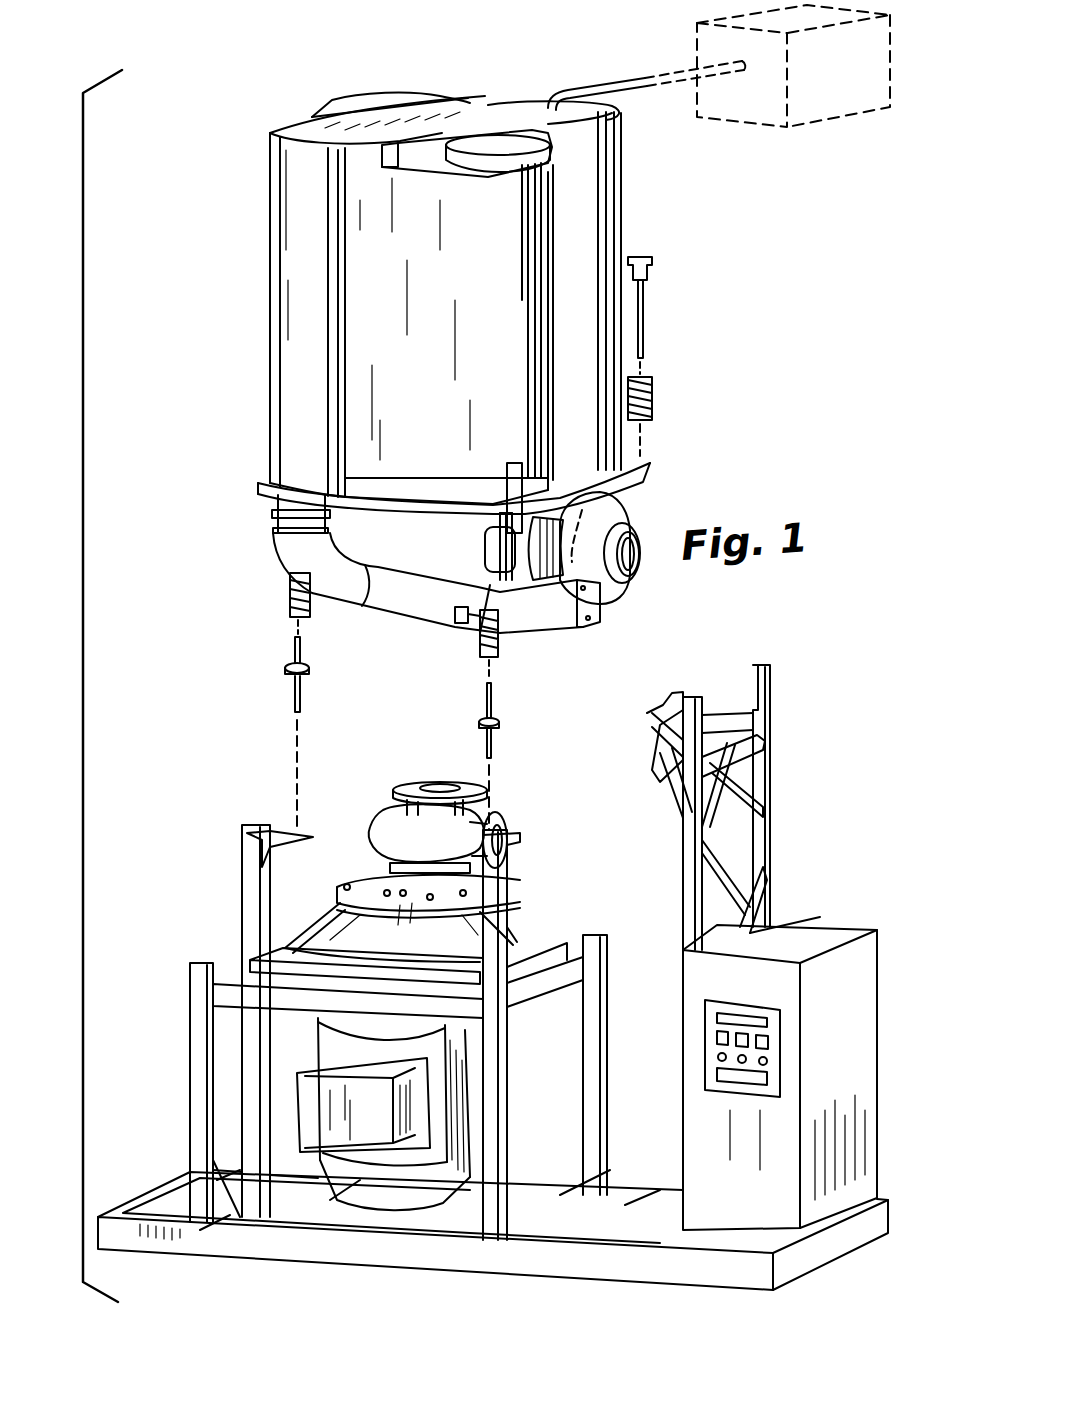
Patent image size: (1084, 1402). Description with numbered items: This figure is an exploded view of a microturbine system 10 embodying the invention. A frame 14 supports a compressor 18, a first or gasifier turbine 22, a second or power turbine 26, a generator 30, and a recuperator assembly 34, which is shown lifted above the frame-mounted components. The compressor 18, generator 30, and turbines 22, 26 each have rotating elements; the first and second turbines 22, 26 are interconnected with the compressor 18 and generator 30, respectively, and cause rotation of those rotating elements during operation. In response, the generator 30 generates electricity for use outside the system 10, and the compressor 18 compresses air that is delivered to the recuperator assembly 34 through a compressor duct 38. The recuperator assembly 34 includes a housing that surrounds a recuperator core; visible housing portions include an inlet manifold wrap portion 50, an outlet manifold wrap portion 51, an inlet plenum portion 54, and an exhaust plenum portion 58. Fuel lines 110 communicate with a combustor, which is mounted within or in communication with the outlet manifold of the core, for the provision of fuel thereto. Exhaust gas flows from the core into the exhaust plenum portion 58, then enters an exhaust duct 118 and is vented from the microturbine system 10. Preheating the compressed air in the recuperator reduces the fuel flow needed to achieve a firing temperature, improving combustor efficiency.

The microturbine system 10 is at (272, 722).
The frame 14 is at (757, 846).
The compressor 18 is at (598, 513).
The first or gasifier turbine 22 is at (483, 545).
The second or power turbine 26 is at (383, 812).
The generator 30 is at (392, 1193).
The recuperator assembly 34 is at (648, 215).
The compressor duct 38 is at (432, 600).
The inlet manifold wrap portion 50 is at (280, 328).
The outlet manifold wrap portion 51 is at (600, 166).
The inlet plenum portion 54 is at (367, 97).
The exhaust plenum portion 58 is at (484, 332).
The fuel lines 110 is at (658, 74).
The exhaust duct 118 is at (503, 140).